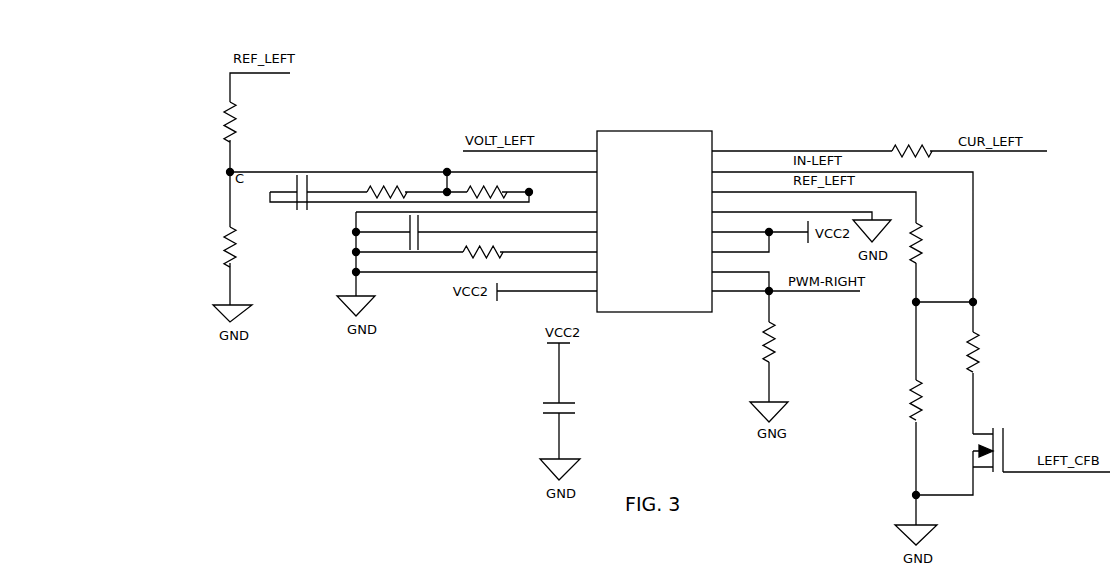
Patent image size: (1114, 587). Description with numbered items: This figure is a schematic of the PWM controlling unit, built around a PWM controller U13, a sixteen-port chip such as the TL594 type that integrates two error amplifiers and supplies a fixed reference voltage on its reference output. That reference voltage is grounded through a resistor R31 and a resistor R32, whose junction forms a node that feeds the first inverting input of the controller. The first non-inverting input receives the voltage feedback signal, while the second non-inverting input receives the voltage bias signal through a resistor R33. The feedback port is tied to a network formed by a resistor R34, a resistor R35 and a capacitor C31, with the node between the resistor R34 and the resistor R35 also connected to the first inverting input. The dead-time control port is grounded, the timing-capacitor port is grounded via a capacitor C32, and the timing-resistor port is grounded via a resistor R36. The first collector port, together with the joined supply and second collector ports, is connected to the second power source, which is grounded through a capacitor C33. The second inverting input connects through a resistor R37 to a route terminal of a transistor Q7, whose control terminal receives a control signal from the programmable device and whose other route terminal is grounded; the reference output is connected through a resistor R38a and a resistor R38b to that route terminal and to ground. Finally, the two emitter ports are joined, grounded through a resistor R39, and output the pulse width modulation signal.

The PWM controller U13 is at (655, 230).
The resistor R31 is at (248, 119).
The resistor R32 is at (248, 242).
The resistor R33 is at (908, 141).
The resistor R34 is at (496, 185).
The resistor R35 is at (402, 187).
The resistor R36 is at (499, 247).
The resistor R37 is at (990, 350).
The resistor R38a is at (936, 241).
The resistor R38b is at (936, 396).
The resistor R39 is at (788, 340).
The capacitor C31 is at (306, 202).
The capacitor C32 is at (431, 232).
The capacitor C33 is at (576, 405).
The transistor Q7 is at (1041, 462).